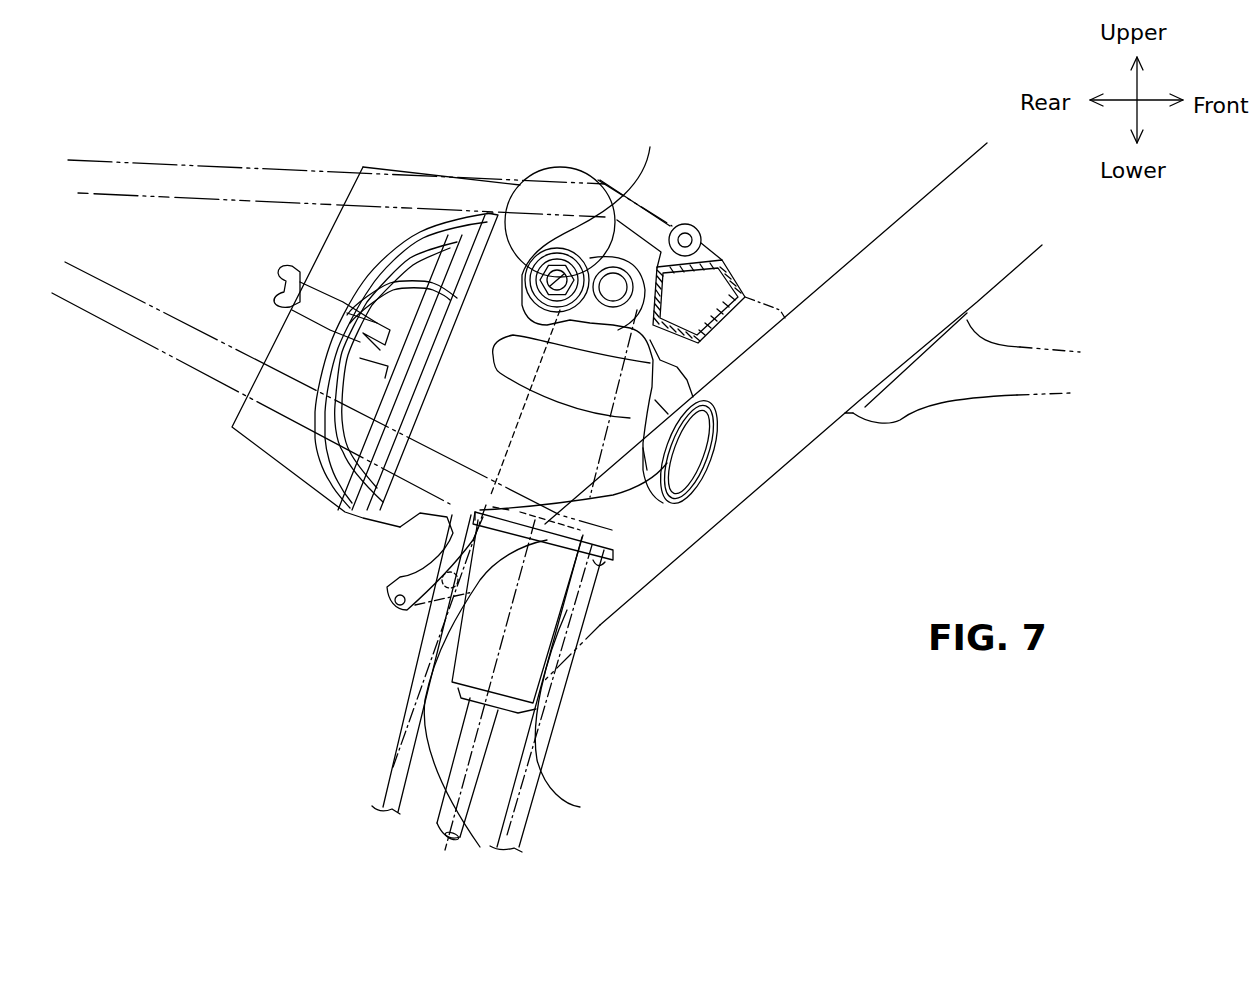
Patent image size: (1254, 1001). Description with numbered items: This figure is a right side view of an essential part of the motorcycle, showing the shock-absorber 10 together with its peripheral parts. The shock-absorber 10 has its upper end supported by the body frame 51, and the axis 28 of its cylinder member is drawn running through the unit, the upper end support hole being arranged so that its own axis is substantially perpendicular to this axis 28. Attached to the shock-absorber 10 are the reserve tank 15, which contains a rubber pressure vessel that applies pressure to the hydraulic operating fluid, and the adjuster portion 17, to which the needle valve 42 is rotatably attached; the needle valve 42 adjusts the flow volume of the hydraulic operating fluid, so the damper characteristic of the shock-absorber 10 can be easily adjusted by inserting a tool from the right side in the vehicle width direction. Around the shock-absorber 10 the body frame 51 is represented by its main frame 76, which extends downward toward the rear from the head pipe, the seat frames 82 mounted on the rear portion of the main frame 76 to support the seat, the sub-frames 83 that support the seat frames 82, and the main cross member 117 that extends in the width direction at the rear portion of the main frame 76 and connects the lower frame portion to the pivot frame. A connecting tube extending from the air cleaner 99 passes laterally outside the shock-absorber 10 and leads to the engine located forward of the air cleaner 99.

The shock-absorber 10 is at (617, 537).
The reserve tank 15 is at (553, 190).
The adjuster portion 17 is at (490, 280).
The axis of the cylinder member 28 is at (500, 665).
The needle valve 42 is at (547, 507).
The body frame 51 is at (887, 233).
The main frame 76 is at (812, 398).
The seat frames 82 is at (170, 162).
The sub-frames 83 is at (137, 340).
The air cleaner 99 is at (438, 207).
The main cross member 117 is at (742, 297).